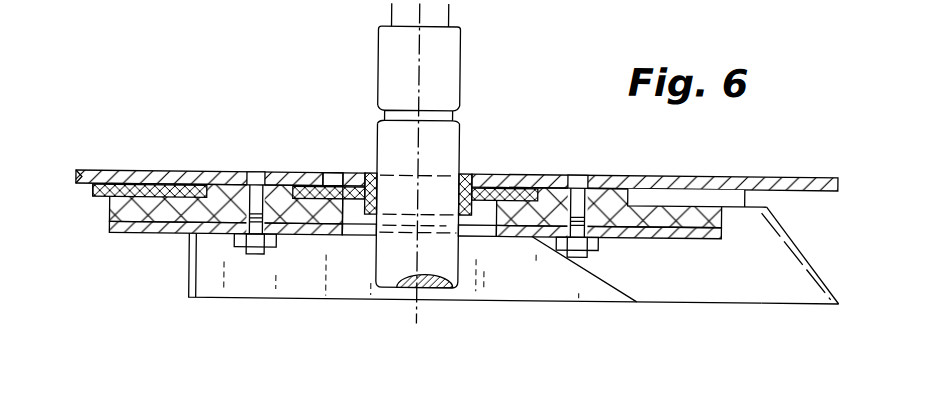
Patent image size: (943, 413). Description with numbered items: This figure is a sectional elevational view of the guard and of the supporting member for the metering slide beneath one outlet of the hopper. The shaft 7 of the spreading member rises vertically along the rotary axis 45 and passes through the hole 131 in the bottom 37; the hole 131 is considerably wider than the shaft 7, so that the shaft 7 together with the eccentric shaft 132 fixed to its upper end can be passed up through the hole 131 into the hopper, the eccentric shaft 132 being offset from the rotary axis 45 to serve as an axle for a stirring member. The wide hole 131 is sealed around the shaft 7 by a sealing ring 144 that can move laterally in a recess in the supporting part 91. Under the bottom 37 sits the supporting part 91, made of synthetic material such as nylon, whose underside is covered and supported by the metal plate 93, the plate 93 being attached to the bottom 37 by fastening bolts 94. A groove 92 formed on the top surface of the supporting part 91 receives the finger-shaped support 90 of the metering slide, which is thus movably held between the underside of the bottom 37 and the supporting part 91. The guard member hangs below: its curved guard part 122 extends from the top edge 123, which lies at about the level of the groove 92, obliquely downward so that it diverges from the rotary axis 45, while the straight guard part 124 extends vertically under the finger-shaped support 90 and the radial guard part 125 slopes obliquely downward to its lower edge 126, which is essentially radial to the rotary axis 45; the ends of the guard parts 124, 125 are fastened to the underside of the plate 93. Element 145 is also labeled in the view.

The shaft 7 is at (448, 138).
The bottom 37 is at (160, 169).
The rotary axis 45 is at (417, 37).
The finger-shaped support 90 is at (95, 194).
The supporting part 91 is at (165, 214).
The groove 92 is at (207, 184).
The metal plate 93 is at (712, 231).
The fastening bolts 94 is at (254, 252).
The curved guard part 122 is at (803, 245).
The top edge 123 is at (743, 200).
The straight guard part 124 is at (197, 264).
The radial guard part 125 is at (597, 267).
The lower edge 126 is at (763, 296).
The hole 131 is at (485, 184).
The eccentric shaft 132 is at (453, 38).
The sealing ring 144 is at (372, 171).
The clamp 145 is at (303, 168).